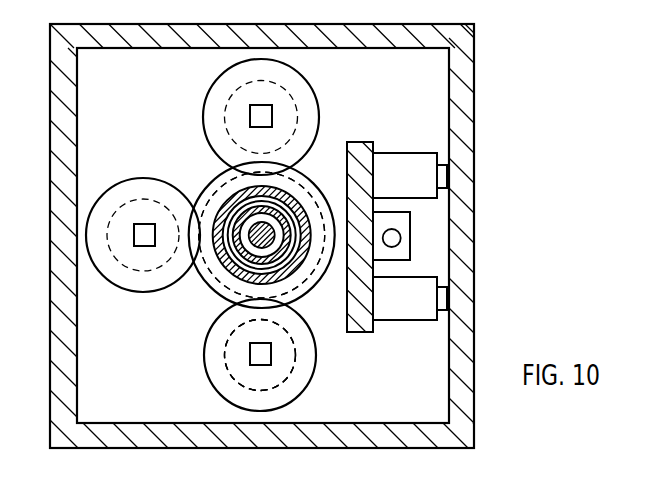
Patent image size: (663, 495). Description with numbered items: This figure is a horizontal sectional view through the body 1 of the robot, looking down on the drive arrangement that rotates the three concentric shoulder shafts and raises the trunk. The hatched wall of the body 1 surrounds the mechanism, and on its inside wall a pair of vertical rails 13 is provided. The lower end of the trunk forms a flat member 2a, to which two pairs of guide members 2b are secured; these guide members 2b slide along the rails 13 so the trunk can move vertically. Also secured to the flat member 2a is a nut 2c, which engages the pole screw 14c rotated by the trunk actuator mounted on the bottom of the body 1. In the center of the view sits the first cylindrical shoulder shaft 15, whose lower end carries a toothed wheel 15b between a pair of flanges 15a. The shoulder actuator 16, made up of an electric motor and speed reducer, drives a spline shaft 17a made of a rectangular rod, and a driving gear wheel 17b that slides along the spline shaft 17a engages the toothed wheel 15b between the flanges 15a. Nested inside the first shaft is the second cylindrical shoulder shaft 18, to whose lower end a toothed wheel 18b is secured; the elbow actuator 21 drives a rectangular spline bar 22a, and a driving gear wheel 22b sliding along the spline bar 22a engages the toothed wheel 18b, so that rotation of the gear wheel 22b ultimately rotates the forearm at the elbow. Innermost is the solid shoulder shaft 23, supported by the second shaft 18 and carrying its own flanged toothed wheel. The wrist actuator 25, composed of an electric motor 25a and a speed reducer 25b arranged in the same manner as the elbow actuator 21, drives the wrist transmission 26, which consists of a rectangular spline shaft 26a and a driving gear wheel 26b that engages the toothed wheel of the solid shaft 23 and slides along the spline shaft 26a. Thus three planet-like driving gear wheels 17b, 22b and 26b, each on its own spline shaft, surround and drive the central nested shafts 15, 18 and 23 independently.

The body 1 is at (376, 449).
The flat member 2a is at (373, 143).
The guide members 2b is at (400, 320).
The nut 2c is at (412, 222).
The vertical rails 13 is at (440, 175).
The pole screw 14c is at (400, 243).
The first cylindrical shoulder shaft 15 is at (225, 259).
The flanges 15a is at (228, 250).
The toothed wheel 15b is at (218, 282).
The shoulder actuator 16 is at (112, 222).
The spline shaft 17a is at (134, 234).
The driving gear wheel 17b is at (100, 272).
The second cylindrical shoulder shaft 18 is at (257, 223).
The toothed wheel 18b is at (228, 182).
The elbow actuator 21 is at (232, 93).
The spline bar 22a is at (272, 115).
The driving gear wheel 22b is at (288, 78).
The solid shoulder shaft 23 is at (262, 219).
The wrist actuator 25 is at (224, 360).
The electric motor 25a is at (260, 355).
The speed reducer 25b is at (260, 355).
The wrist transmission 26 is at (272, 352).
The spline shaft 26a is at (262, 367).
The driving gear wheel 26b is at (240, 408).